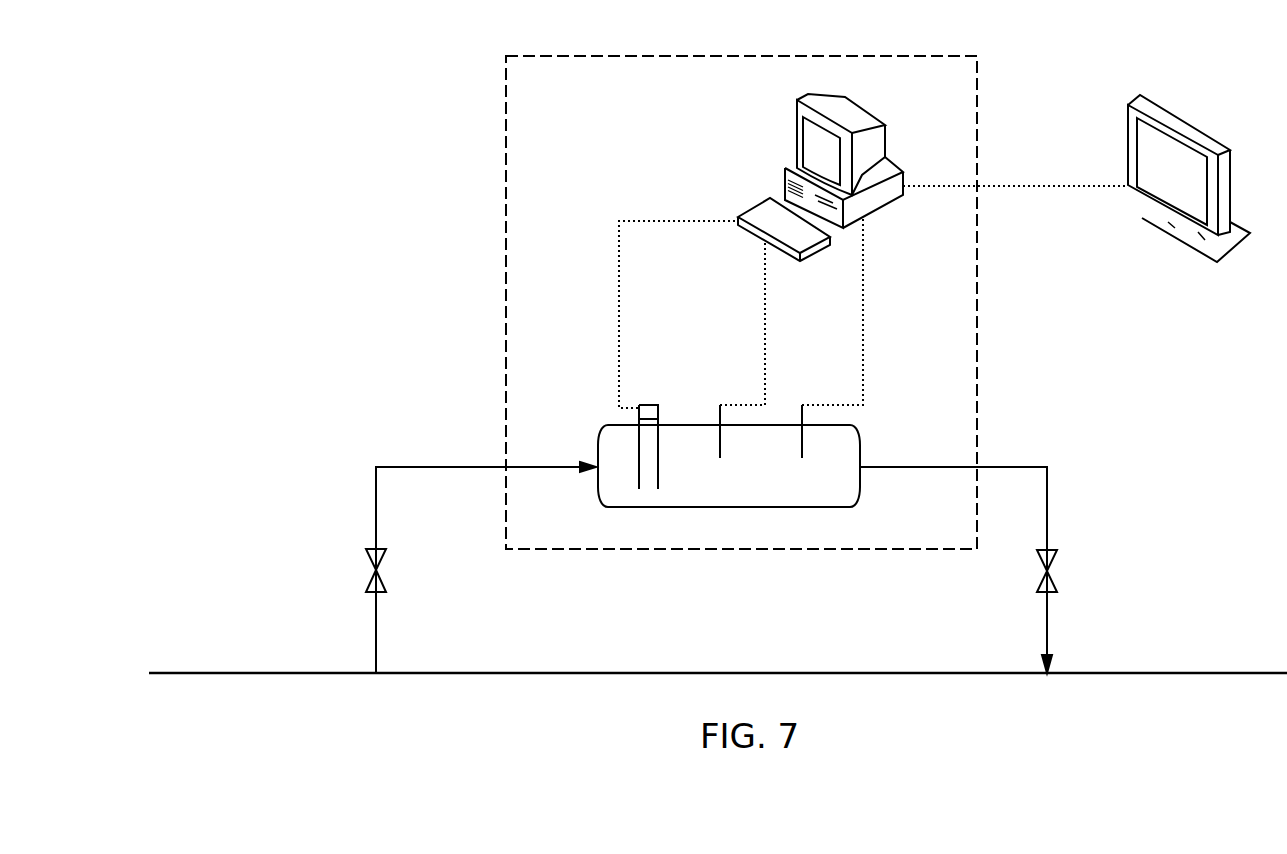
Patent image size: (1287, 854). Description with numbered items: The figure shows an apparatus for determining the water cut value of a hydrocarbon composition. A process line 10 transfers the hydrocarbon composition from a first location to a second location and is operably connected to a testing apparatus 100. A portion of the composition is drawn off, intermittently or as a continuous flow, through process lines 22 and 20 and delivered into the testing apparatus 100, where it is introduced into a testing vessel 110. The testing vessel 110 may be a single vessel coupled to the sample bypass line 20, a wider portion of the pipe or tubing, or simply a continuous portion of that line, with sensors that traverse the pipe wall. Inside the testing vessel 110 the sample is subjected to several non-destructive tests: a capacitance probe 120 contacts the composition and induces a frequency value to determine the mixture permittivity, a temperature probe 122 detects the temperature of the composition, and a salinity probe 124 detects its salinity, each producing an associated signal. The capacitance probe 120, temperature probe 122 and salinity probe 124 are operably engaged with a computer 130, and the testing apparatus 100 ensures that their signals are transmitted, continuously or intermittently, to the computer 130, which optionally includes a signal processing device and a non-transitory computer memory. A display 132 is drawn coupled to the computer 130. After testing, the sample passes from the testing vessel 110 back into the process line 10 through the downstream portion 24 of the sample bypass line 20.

The process line 10 is at (437, 672).
The sample bypass line 20 is at (457, 465).
The process line 22 is at (372, 582).
The downstream portion of the sample bypass line 24 is at (1052, 578).
The testing apparatus 100 is at (567, 97).
The testing vessel 110 is at (785, 492).
The capacitance probe 120 is at (619, 360).
The temperature probe 122 is at (765, 330).
The salinity probe 124 is at (863, 345).
The computer 130 is at (797, 125).
The display 132 is at (1170, 105).